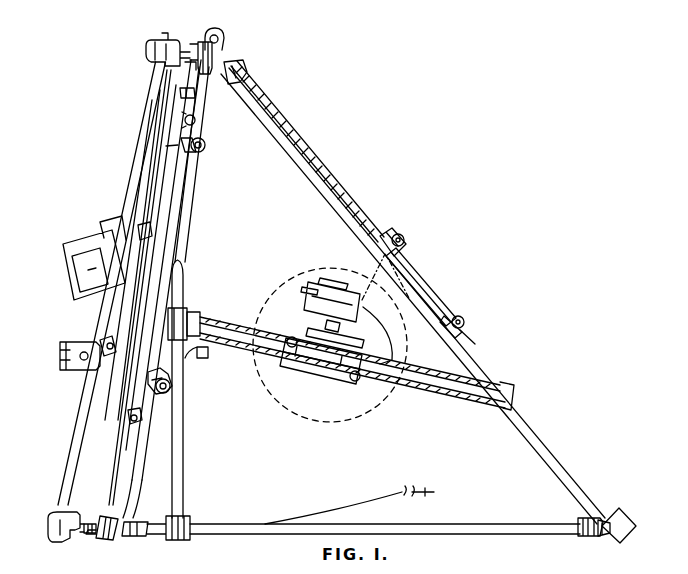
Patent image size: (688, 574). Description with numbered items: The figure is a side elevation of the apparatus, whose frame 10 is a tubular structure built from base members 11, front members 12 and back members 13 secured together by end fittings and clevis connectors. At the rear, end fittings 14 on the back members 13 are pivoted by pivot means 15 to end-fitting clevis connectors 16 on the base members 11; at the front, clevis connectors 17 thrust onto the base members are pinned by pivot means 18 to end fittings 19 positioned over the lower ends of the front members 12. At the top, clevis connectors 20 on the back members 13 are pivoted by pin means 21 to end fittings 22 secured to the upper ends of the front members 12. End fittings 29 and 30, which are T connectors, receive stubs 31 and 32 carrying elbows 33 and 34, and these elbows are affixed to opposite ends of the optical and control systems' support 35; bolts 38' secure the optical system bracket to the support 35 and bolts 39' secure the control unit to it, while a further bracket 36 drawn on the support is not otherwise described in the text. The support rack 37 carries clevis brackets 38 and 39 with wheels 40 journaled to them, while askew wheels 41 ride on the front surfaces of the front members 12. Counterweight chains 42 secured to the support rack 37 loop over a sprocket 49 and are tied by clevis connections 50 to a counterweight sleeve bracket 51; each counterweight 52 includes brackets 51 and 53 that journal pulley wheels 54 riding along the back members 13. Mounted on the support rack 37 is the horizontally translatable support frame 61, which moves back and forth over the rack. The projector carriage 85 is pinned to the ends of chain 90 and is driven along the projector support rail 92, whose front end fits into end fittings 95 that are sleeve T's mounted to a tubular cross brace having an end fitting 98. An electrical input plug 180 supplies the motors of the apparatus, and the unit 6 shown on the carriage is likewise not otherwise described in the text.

The cutting unit / motor assembly 6 is at (344, 252).
The frame 10 is at (571, 470).
The base members 11 is at (463, 528).
The front members 12 is at (126, 458).
The back members 13 is at (482, 356).
The end fittings 14 is at (625, 524).
The pivot means 15 is at (606, 534).
The end-fitting clevis connectors 16 is at (587, 536).
The clevis connectors 17 is at (148, 536).
The pivot means 18 is at (141, 521).
The end fittings 19 is at (117, 540).
The clevis connectors 20 is at (244, 70).
The pin means 21 is at (243, 64).
The end fittings 22 is at (190, 72).
The end fitting 29 is at (98, 518).
The end fitting 30 is at (214, 38).
The stub 31 is at (88, 538).
The stub 32 is at (199, 46).
The elbow 33 is at (52, 540).
The elbow 34 is at (165, 42).
The optical and control systems' support 35 is at (80, 414).
The bracket 36 is at (76, 344).
The support rack 37 is at (190, 186).
The clevis bracket 38 is at (160, 376).
The bolts 38' is at (125, 255).
The clevis bracket 39 is at (203, 155).
The bolts 39' is at (111, 260).
The wheels 40 is at (204, 147).
The askew wheels 41 is at (182, 118).
The counterweight chains 42 is at (186, 92).
The sprocket 49 is at (222, 36).
The clevis connections 50 is at (388, 240).
The counterweight sleeve bracket 51 is at (405, 268).
The counterweight 52 is at (420, 288).
The bracket 53 is at (456, 312).
The pulley wheels 54 is at (403, 247).
The horizontally translatable support frame 61 is at (165, 166).
The projector carriage 85 is at (318, 362).
The chain 90 is at (470, 402).
The projector support rail 92 is at (440, 396).
The end fittings 95 is at (200, 323).
The end fitting 98 is at (190, 303).
The electrical input plug 180 is at (433, 487).